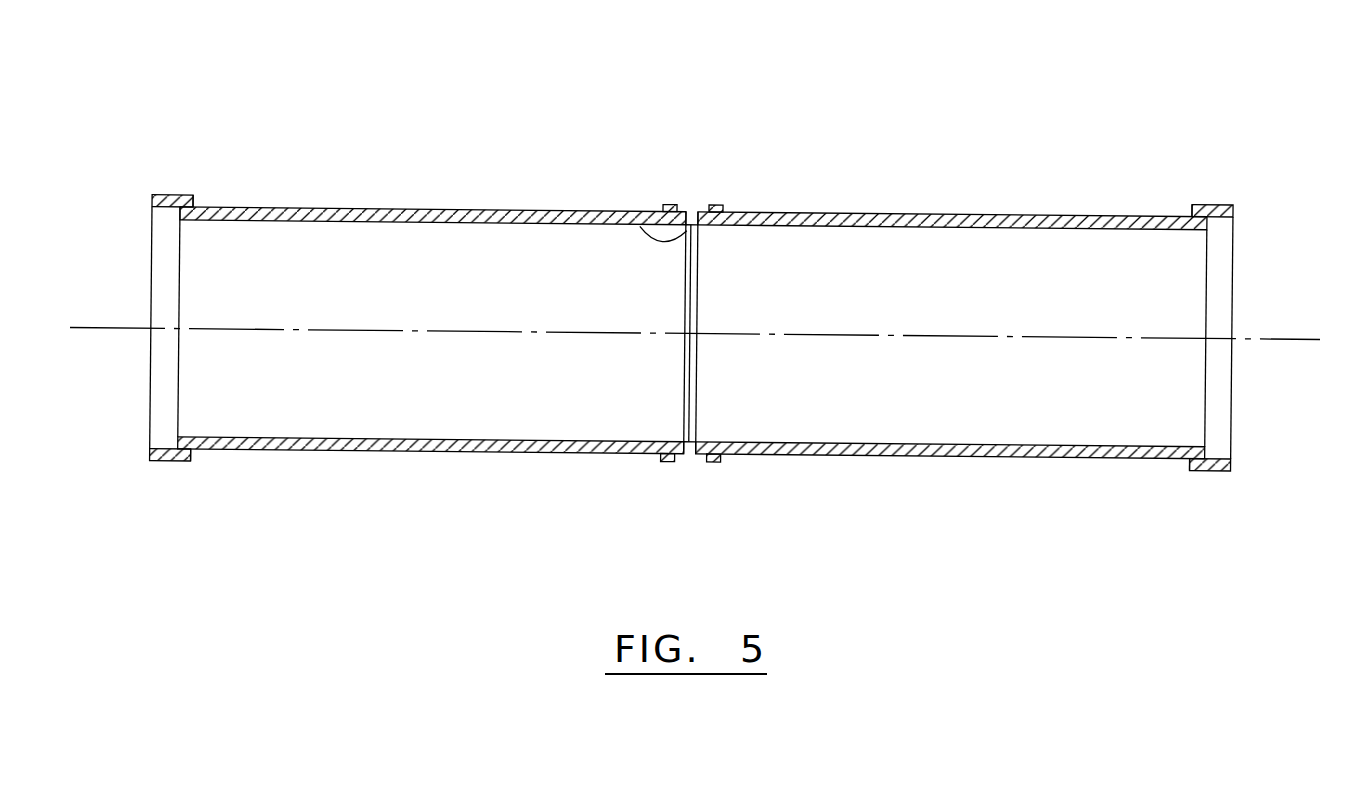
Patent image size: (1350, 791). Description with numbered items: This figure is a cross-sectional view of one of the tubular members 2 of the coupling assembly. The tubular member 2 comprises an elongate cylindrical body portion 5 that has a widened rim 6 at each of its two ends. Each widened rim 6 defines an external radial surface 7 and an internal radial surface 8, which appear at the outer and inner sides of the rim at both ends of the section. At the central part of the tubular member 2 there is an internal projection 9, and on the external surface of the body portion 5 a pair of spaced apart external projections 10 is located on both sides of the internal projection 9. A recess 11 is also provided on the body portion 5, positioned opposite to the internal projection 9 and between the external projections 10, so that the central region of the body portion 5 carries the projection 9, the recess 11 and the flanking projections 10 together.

The tubular member 2 is at (465, 268).
The elongate cylindrical body portion 5 is at (932, 211).
The widened rim 6 is at (170, 196).
The external radial surface 7 is at (197, 208).
The internal radial surface 8 is at (172, 445).
The internal projection 9 is at (637, 215).
The external projection 10 is at (713, 200).
The recess 11 is at (695, 440).